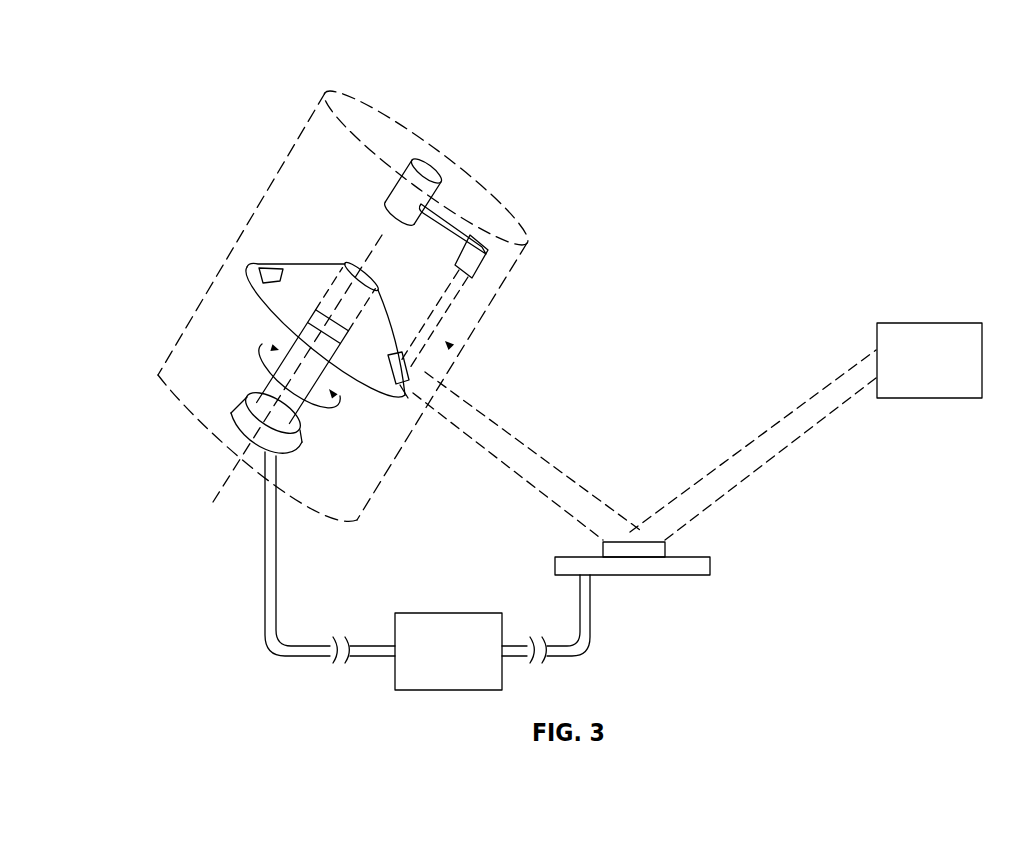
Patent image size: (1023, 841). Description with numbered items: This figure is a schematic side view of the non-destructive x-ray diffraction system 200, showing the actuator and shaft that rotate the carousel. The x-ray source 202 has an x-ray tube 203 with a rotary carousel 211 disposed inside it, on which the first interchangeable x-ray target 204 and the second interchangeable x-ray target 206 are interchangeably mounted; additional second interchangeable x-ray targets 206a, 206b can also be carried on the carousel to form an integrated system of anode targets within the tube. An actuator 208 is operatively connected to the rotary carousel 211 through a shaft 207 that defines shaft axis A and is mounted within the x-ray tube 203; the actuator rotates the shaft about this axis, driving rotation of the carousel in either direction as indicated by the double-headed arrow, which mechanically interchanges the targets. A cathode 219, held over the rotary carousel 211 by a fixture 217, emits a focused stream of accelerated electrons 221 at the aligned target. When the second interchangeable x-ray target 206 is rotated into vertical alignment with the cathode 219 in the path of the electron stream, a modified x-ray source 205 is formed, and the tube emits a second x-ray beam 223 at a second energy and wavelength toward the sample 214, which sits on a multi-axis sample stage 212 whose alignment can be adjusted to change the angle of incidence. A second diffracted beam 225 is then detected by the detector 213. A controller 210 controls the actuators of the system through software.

The x-ray diffraction system 200 is at (250, 74).
The x-ray source 202 is at (244, 170).
The x-ray tube 203 is at (200, 297).
The first interchangeable x-ray target 204 is at (376, 328).
The modified x-ray source 205 is at (449, 344).
The second interchangeable x-ray target 206 is at (410, 403).
The additional second interchangeable x-ray target 206a is at (277, 267).
The additional second interchangeable x-ray target 206b is at (338, 362).
The shaft 207 is at (273, 395).
The actuator 208 is at (283, 449).
The controller 210 is at (466, 665).
The rotary carousel 211 is at (253, 287).
The multi-axis sample stage 212 is at (633, 576).
The detector 213 is at (948, 377).
The sample 214 is at (665, 550).
The fixture 217 is at (440, 180).
The cathode 219 is at (484, 266).
The focused stream of accelerated electrons 221 is at (452, 305).
The second x-ray beam 223 is at (530, 447).
The second diffracted beam 225 is at (762, 463).